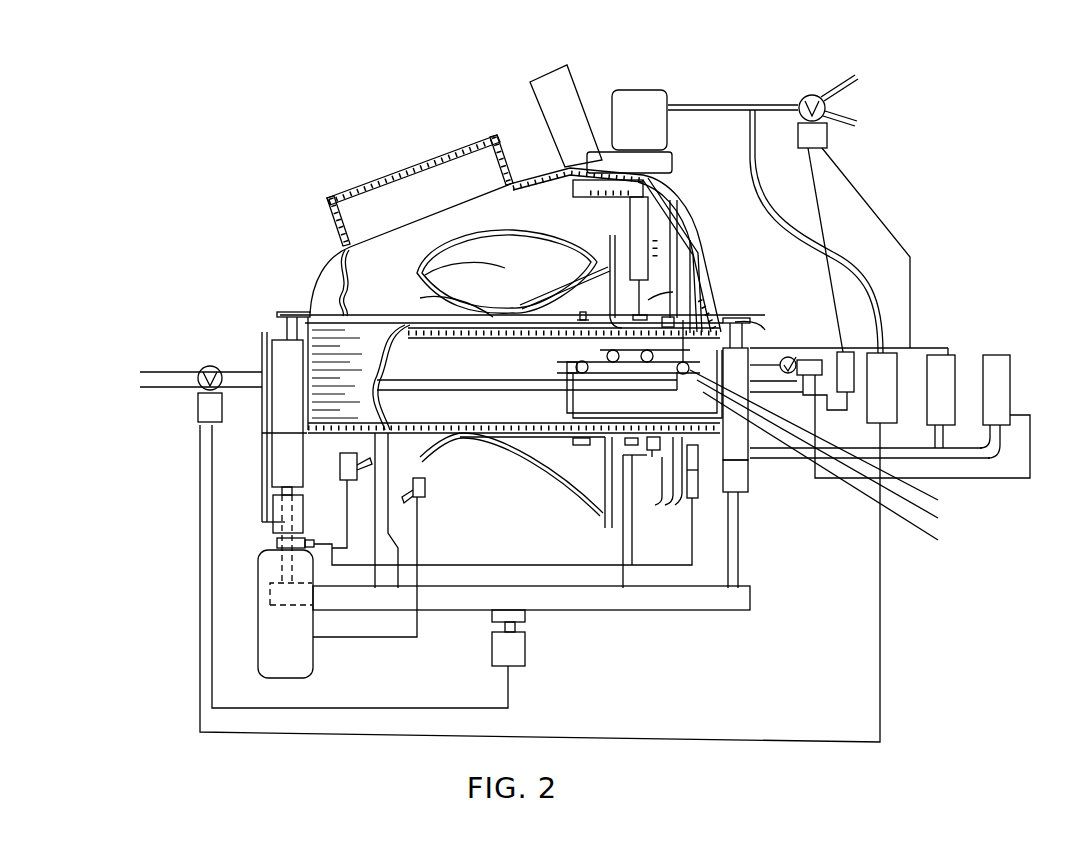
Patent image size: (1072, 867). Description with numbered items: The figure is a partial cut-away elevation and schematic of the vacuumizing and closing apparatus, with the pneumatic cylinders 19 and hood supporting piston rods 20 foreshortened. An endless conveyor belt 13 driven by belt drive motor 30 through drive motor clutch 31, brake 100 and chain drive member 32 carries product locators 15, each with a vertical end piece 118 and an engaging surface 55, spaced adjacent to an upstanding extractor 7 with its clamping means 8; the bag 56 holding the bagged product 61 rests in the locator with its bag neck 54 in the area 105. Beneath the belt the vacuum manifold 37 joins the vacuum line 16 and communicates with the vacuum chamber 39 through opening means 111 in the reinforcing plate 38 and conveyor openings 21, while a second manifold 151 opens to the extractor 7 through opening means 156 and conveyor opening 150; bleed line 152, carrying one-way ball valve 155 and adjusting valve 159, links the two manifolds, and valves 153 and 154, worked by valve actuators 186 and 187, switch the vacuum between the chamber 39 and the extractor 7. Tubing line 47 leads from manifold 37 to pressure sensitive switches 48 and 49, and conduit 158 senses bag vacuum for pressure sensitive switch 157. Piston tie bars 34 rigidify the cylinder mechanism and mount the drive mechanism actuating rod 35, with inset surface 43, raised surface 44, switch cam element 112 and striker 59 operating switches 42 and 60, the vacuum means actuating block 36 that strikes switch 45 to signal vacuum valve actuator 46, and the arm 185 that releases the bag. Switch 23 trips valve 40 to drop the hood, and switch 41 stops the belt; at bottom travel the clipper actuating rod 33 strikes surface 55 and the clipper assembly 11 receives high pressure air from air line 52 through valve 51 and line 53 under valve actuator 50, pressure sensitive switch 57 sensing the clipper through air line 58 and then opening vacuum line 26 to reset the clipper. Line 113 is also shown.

The extractor 7 is at (674, 250).
The extractor clamping means 8 is at (662, 323).
The bag-closing clipper assembly 11 is at (628, 131).
The conveyor belt 13 is at (320, 383).
The product locator 15 is at (422, 298).
The connecting means (vacuum connector line) 16 is at (233, 386).
The pneumatic cylinder 19 is at (278, 446).
The hood supporting piston rod 20 is at (278, 332).
The conveyor opening 21 is at (598, 318).
The switch 23 is at (748, 470).
The vacuum line 26 is at (850, 113).
The belt drive motor 30 is at (314, 662).
The drive motor clutch 31 is at (276, 546).
The chain drive member 32 is at (262, 480).
The clipper actuating rod (gripping jaw actuator) 33 is at (648, 300).
The piston tie bar 34 is at (658, 606).
The drive mechanism actuating rod 35 is at (375, 512).
The vacuum means actuating block 36 is at (526, 618).
The vacuum manifold 37 is at (415, 380).
The reinforcing plate 38 is at (302, 342).
The vacuum chamber 39 is at (540, 214).
The valve 40 is at (792, 357).
The switch 41 is at (699, 490).
The switch 42 is at (426, 490).
The inset surface 43 is at (399, 557).
The raised surface 44 is at (514, 422).
The switch 45 is at (526, 650).
The vacuum valve actuator 46 is at (198, 406).
The tubing line 47 is at (678, 416).
The pressure sensitive switch 48 is at (941, 401).
The pressure sensitive switch 49 is at (880, 406).
The valve actuator 50 is at (828, 138).
The valve 51 is at (811, 95).
The high pressure air line 52 is at (852, 76).
The line 53 is at (700, 105).
The bag neck 54 is at (693, 216).
The engaging surface 55 is at (628, 258).
The bag 56 is at (497, 228).
The pressure sensitive switch 57 is at (849, 385).
The air line 58 is at (766, 200).
The striker 59 is at (387, 517).
The switch 60 is at (340, 471).
The bagged and vacuumized product 61 is at (430, 273).
The brake 100 is at (277, 540).
The area 105 is at (657, 280).
The opening means 111 is at (556, 305).
The switch cam element 112 is at (399, 545).
The line 113 is at (1032, 425).
The vertical end piece 118 is at (613, 236).
The conveyor opening 150 is at (735, 333).
The manifold 151 is at (831, 438).
The bleed line 152 is at (598, 350).
The valve 153 is at (566, 364).
The valve 154 is at (837, 470).
The one-way ball valve 155 is at (670, 382).
The opening means 156 is at (770, 335).
The pressure sensitive switch 157 is at (847, 352).
The conduit 158 is at (772, 392).
The valve 159 is at (607, 370).
The arm 185 is at (623, 547).
The valve actuator 186 is at (580, 378).
The valve actuator 187 is at (834, 453).